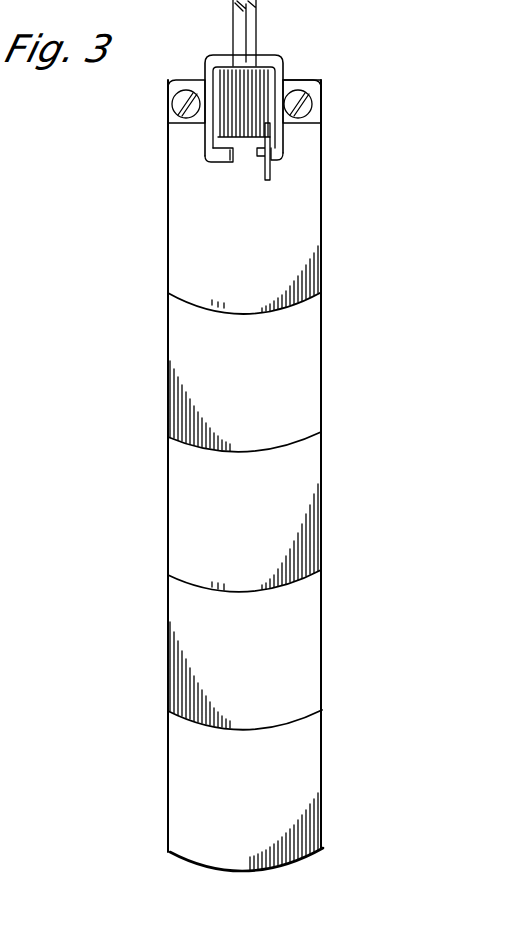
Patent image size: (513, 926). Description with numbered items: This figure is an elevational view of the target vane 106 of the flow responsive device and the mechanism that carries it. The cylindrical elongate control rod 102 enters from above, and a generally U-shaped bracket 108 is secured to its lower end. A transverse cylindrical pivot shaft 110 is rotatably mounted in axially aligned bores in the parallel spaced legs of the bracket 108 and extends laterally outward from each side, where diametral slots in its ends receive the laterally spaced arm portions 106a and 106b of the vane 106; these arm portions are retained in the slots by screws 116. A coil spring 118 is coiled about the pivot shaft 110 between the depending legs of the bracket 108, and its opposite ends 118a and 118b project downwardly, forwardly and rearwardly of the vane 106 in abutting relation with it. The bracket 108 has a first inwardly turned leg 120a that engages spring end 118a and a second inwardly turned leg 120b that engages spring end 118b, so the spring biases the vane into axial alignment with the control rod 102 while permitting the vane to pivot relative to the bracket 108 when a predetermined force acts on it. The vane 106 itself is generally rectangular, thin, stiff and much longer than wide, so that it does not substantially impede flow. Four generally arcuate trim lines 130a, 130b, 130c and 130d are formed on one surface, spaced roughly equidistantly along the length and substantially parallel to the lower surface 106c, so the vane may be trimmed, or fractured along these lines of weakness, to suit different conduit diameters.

The control rod 102 is at (256, 27).
The target vane 106 is at (168, 495).
The arm portion 106a is at (300, 142).
The arm portion 106b is at (182, 136).
The lower surface 106c is at (178, 861).
The U-shaped bracket 108 is at (219, 55).
The pivot shaft 110 is at (298, 80).
The screws 116 is at (172, 100).
The coil spring 118 is at (218, 74).
The coil spring end 118a is at (272, 173).
The coil spring end 118b is at (205, 158).
The first inwardly turned leg 120a is at (262, 166).
The second inwardly turned leg 120b is at (233, 162).
The trim line 130a is at (304, 298).
The trim line 130b is at (302, 437).
The trim line 130c is at (303, 577).
The trim line 130d is at (303, 713).